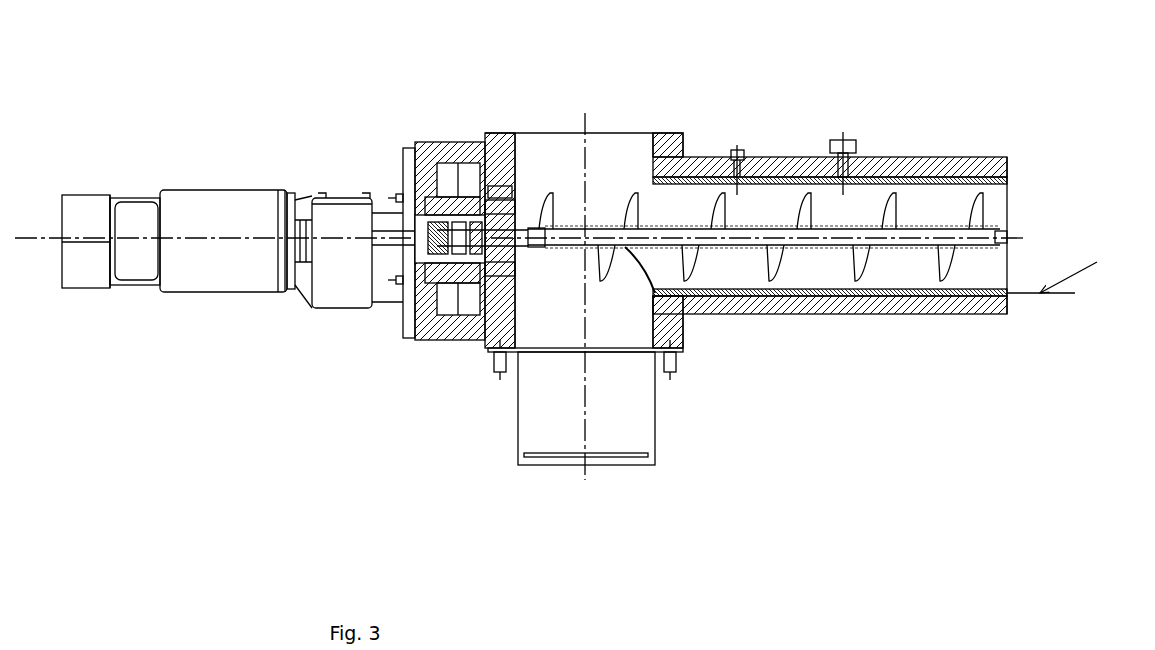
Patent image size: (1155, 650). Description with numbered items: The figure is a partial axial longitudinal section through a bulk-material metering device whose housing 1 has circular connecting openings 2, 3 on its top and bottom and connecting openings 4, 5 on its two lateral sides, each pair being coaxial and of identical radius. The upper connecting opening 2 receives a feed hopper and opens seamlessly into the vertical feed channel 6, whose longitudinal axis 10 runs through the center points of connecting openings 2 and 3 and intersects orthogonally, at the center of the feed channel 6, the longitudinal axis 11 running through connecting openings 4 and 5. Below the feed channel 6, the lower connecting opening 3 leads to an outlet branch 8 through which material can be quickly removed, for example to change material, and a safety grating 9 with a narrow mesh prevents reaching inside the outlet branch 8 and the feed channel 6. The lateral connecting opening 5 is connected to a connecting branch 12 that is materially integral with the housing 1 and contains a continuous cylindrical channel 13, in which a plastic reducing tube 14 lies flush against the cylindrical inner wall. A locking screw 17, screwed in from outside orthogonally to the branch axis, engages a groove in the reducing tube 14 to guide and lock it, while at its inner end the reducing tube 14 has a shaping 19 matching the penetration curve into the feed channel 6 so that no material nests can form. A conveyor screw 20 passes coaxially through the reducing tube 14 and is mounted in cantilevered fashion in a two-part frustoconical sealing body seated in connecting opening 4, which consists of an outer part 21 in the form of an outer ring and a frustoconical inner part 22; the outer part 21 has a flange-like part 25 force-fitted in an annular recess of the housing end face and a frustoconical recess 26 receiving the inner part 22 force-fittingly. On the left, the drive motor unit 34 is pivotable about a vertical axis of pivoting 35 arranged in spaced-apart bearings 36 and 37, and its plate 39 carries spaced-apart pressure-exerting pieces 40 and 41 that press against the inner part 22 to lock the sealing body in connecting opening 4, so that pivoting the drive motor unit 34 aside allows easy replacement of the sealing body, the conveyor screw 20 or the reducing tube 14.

The housing 1 is at (657, 130).
The connecting opening 2 is at (545, 133).
The connecting opening 3 is at (560, 334).
The connecting opening 4 is at (532, 290).
The connecting opening 5 is at (650, 262).
The feed channel 6 is at (613, 155).
The outlet branch 8 is at (620, 427).
The safety grating 9 is at (598, 447).
The longitudinal axis 10 is at (589, 407).
The longitudinal axis 11 is at (197, 240).
The connecting branch 12 is at (925, 165).
The cylindrical channel 13 is at (1067, 266).
The reducing tube 14 is at (903, 293).
The locking screw 17 is at (848, 138).
The shaping 19 is at (635, 273).
The conveyor screw 20 is at (935, 228).
The outer part 21 is at (514, 172).
The inner part 22 is at (470, 285).
The flange-like part 25 is at (438, 232).
The frustoconical recess 26 is at (477, 150).
The drive motor unit 34 is at (223, 278).
The axis of pivoting 35 is at (452, 123).
The bearing 36 is at (447, 150).
The bearing 37 is at (478, 290).
The plate 39 is at (440, 250).
The pressure-exerting piece 40 is at (492, 198).
The pressure-exerting piece 41 is at (462, 265).